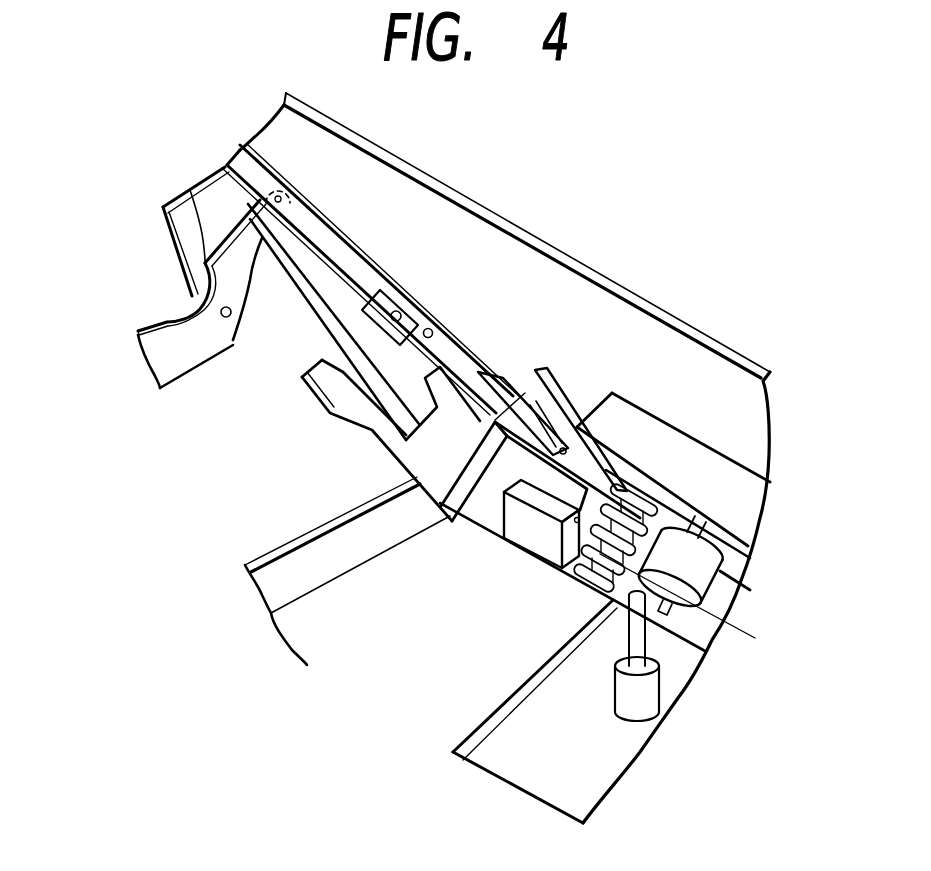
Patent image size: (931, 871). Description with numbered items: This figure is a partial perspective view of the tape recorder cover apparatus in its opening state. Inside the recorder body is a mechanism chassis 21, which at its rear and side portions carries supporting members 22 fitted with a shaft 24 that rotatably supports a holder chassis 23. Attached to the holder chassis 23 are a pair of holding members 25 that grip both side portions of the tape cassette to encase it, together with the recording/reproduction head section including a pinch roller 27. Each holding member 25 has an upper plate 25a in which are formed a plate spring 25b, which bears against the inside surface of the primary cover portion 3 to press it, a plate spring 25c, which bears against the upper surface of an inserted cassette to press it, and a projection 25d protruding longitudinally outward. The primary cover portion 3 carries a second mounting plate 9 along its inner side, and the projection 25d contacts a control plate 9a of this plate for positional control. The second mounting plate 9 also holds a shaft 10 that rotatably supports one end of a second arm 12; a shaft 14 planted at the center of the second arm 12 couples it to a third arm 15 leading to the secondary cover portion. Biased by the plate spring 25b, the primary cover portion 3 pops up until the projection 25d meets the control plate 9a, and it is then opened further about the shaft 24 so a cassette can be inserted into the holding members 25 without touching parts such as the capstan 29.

The primary cover portion 3 is at (523, 253).
The second mounting plate 9 is at (375, 287).
The control plate 9a is at (427, 340).
The shaft 10 is at (292, 196).
The second arm 12 is at (175, 385).
The shaft 14 is at (226, 318).
The third arm 15 is at (190, 235).
The mechanism chassis 21 is at (317, 610).
The supporting member 22 is at (510, 533).
The holder chassis 23 is at (737, 560).
The shaft 24 is at (545, 557).
The holding member 25 is at (408, 497).
The upper plate 25a is at (541, 368).
The plate spring 25b is at (503, 375).
The plate spring 25c is at (560, 422).
The projection 25d is at (430, 327).
The pinch roller 27 is at (700, 592).
The capstan 29 is at (650, 643).